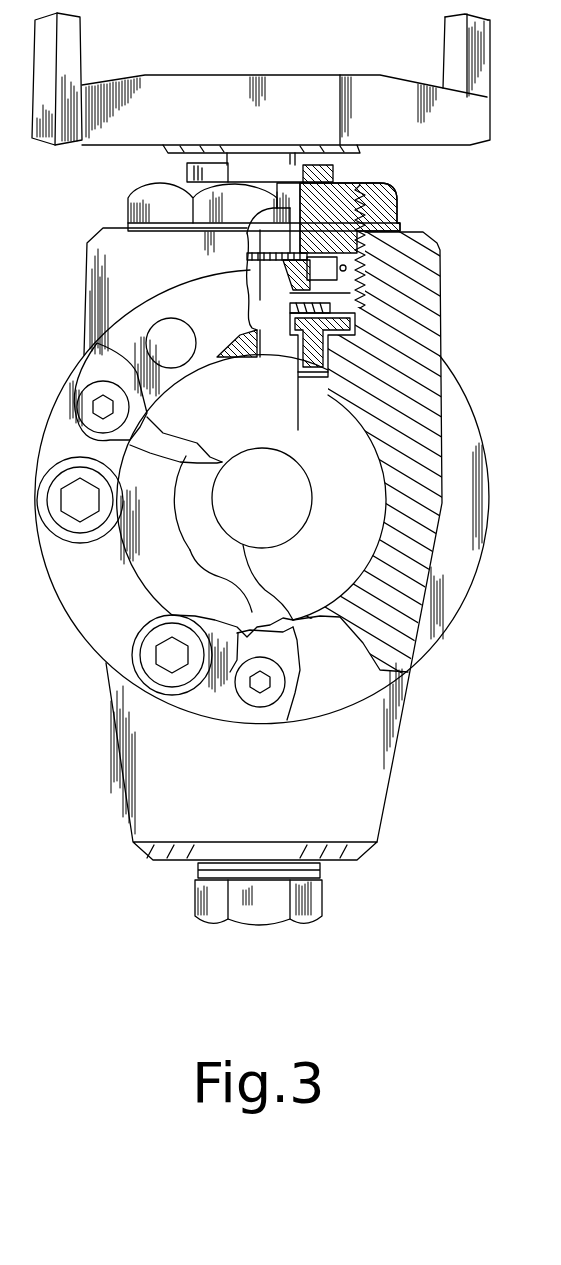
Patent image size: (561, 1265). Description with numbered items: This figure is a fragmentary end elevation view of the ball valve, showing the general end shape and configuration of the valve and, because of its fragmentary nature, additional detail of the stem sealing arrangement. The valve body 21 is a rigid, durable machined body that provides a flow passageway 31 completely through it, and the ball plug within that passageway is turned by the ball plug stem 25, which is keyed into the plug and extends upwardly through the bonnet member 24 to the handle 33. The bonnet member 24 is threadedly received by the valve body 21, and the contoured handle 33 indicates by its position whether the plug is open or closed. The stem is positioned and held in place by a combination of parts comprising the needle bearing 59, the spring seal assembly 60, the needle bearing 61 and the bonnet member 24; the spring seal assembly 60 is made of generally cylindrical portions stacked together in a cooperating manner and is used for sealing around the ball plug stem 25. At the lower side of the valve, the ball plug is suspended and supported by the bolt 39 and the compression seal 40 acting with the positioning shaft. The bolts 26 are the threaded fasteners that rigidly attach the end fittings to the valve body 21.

The valve body 21 is at (105, 313).
The bonnet member 24 is at (385, 209).
The ball plug stem 25 is at (244, 249).
The bolts 26 is at (123, 653).
The flow passageway 31 is at (295, 485).
The handle 33 is at (161, 85).
The bolt 39 is at (313, 917).
The compression seal 40 is at (318, 868).
The needle bearing 59 is at (356, 329).
The spring seal assembly 60 is at (346, 268).
The needle bearing 61 is at (337, 172).